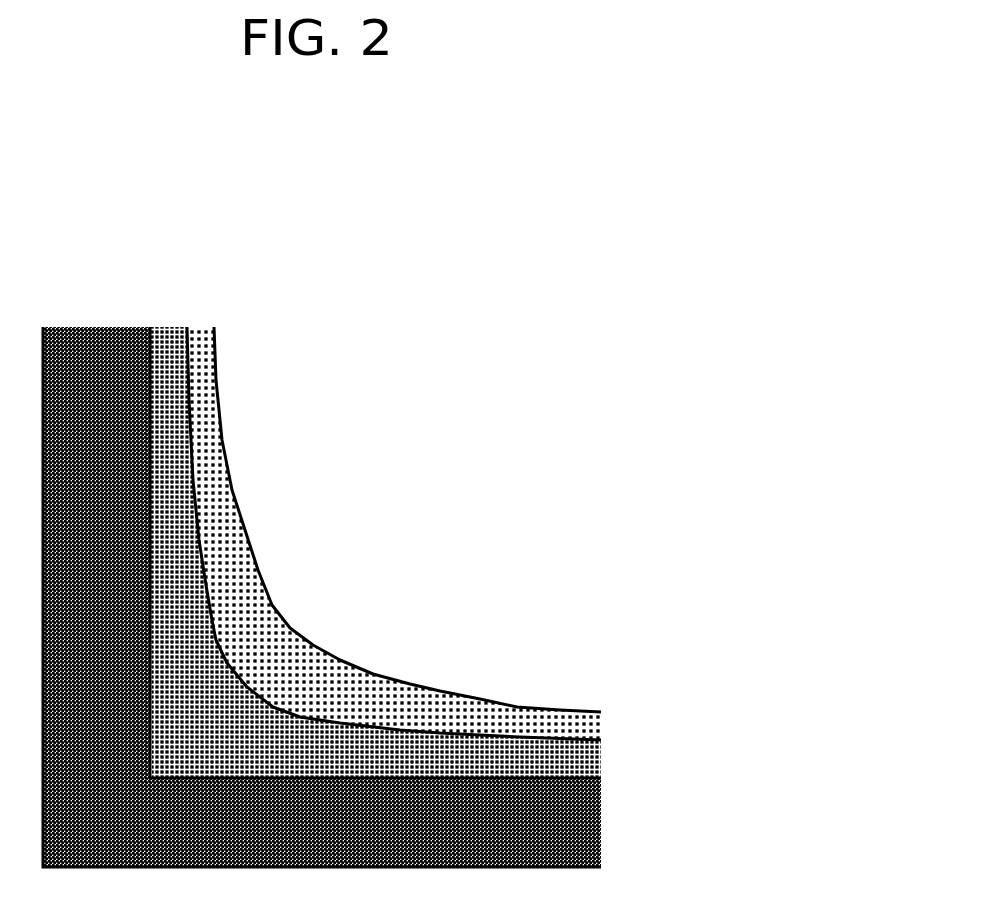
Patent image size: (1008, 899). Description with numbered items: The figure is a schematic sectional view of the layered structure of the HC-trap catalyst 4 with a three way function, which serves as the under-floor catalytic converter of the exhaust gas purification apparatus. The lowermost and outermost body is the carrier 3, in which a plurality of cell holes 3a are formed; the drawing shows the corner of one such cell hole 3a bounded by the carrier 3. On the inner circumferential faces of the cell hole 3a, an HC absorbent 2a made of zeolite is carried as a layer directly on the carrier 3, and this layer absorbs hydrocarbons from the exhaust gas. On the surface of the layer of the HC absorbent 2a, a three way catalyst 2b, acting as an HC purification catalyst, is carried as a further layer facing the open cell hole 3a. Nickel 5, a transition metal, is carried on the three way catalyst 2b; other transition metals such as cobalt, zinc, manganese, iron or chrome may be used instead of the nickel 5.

The HC absorbent 2a is at (306, 759).
The three way catalyst 2b is at (240, 605).
The carrier 3 is at (573, 837).
The cell hole 3a is at (562, 777).
The HC-trap catalyst with a three way function 4 is at (512, 540).
The nickel 5 is at (308, 677).